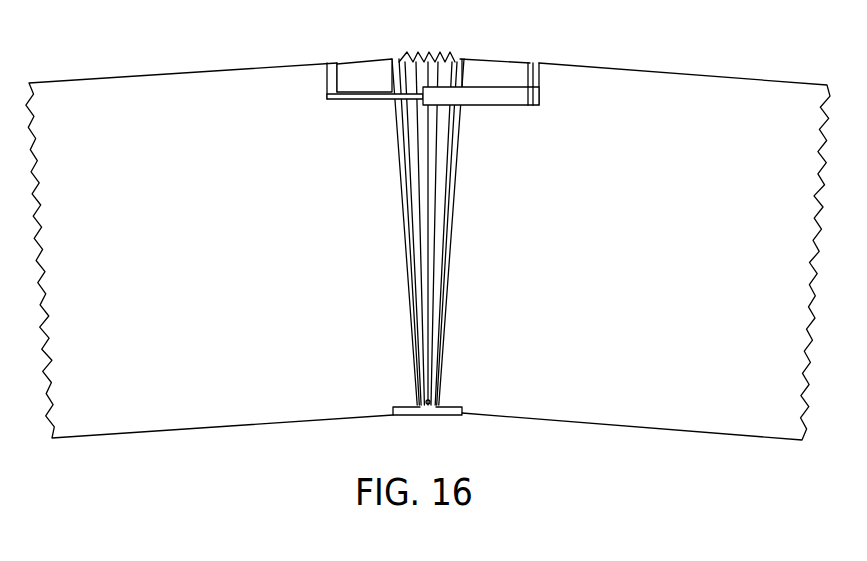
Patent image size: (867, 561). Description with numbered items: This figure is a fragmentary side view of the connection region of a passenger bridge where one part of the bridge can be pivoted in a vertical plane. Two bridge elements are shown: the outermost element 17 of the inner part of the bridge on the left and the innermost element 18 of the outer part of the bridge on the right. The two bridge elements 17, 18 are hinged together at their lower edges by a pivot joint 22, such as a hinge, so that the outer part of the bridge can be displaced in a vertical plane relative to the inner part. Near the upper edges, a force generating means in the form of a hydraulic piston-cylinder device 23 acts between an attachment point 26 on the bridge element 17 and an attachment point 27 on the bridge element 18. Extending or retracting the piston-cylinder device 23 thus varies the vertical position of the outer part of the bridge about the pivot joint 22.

The outermost element of the inner part 17 is at (168, 82).
The innermost element of the outer part 18 is at (660, 83).
The pivot joint 22 is at (428, 405).
The hydraulic piston-cylinder device 23 is at (488, 105).
The attachment point 26 is at (328, 82).
The attachment point 27 is at (540, 83).